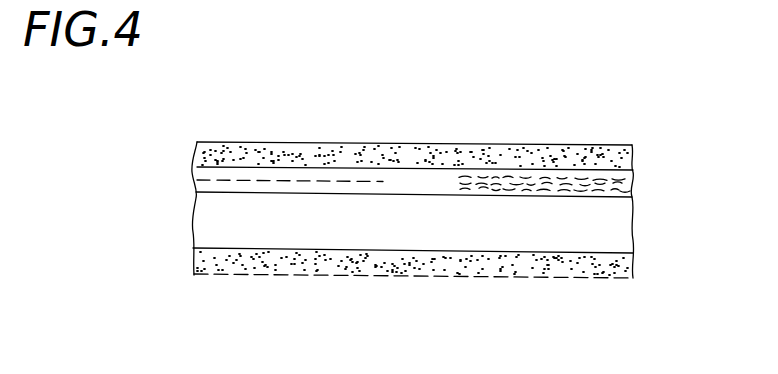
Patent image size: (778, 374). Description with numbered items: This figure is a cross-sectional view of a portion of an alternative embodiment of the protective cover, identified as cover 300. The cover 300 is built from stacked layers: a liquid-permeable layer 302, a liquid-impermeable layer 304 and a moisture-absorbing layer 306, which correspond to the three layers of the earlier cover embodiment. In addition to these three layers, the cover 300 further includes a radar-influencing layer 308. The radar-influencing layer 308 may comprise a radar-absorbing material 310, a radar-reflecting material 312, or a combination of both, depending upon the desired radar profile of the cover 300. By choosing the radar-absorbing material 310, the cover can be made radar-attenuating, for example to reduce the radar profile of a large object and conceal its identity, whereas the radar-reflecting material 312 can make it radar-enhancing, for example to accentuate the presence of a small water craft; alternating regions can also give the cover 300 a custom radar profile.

The cover 300 is at (350, 127).
The liquid-permeable layer 302 is at (578, 268).
The liquid-impermeable layer 304 is at (603, 159).
The moisture-absorbing layer 306 is at (620, 222).
The radar-influencing layer 308 is at (622, 185).
The radar-absorbing material 310 is at (520, 181).
The radar-reflecting material 312 is at (248, 179).